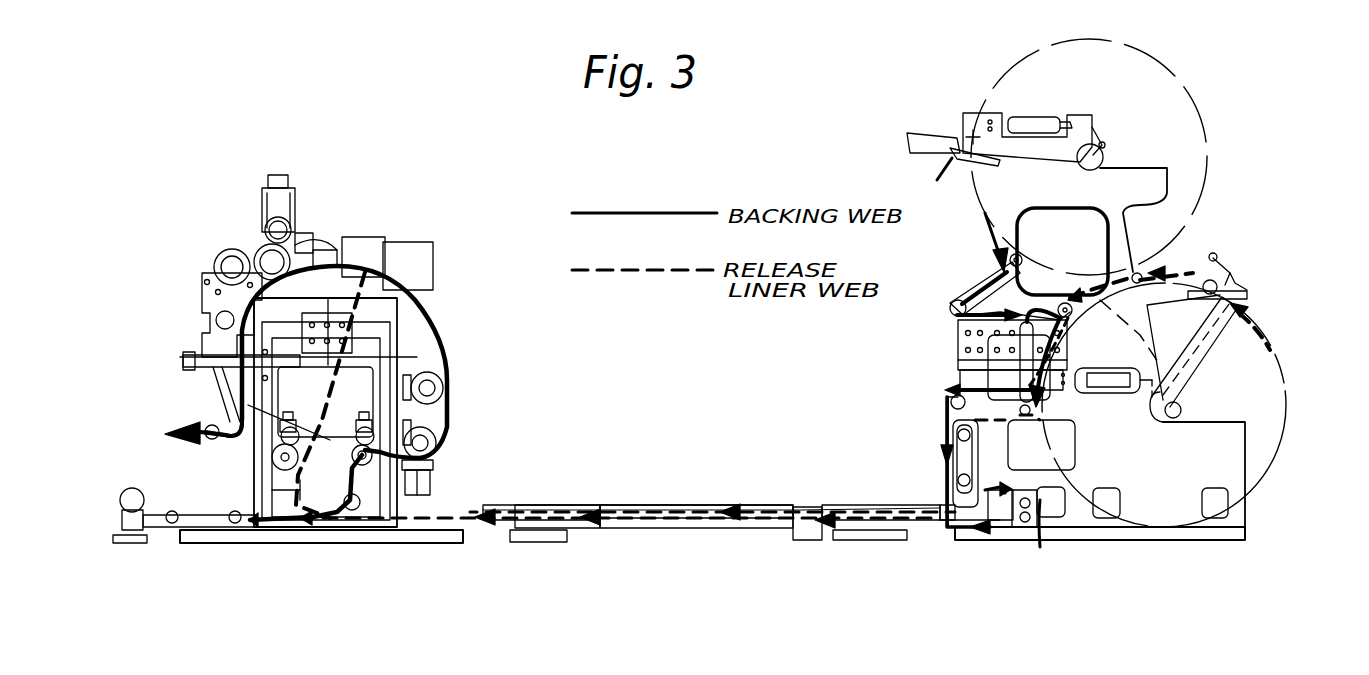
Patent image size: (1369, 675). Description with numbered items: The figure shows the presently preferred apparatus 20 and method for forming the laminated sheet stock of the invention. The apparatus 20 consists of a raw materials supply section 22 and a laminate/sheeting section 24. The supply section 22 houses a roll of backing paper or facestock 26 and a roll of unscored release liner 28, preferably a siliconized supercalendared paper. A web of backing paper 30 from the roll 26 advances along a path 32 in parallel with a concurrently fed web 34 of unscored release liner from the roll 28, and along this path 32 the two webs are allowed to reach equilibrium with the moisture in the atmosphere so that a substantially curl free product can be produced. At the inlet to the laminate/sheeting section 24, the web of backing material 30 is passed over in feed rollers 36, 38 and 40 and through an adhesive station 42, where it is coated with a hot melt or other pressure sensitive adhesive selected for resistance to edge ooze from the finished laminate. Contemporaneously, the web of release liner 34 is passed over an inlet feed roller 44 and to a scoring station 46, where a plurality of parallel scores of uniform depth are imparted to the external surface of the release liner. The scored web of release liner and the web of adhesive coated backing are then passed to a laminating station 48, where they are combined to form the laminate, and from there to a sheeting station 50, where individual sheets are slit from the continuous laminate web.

The apparatus for production of sheet laminates 20 is at (835, 500).
The raw materials supply section 22 is at (982, 292).
The laminate/sheeting section 24 is at (460, 392).
The roll of backing paper 26 is at (1158, 78).
The roll of unscored release liner 28 is at (1270, 380).
The web of backing paper 30 is at (940, 445).
The path 32 is at (672, 505).
The web of unscored release liner 34 is at (1036, 522).
The in feed roller 36 is at (440, 444).
The in feed roller 38 is at (377, 443).
The in feed roller 40 is at (437, 384).
The adhesive station 42 is at (420, 263).
The inlet feed roller 44 is at (327, 333).
The scoring station 46 is at (360, 250).
The laminating station 48 is at (290, 258).
The sheeting station 50 is at (220, 415).